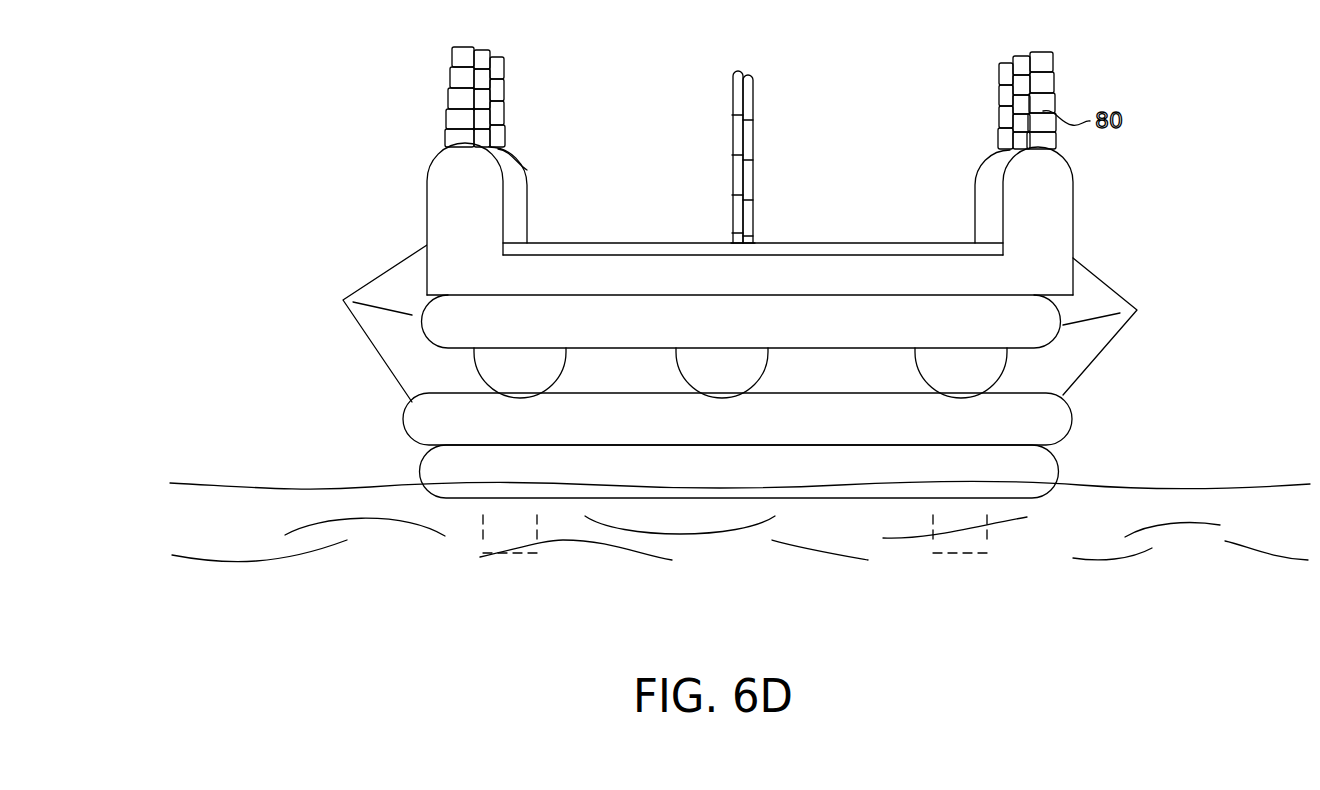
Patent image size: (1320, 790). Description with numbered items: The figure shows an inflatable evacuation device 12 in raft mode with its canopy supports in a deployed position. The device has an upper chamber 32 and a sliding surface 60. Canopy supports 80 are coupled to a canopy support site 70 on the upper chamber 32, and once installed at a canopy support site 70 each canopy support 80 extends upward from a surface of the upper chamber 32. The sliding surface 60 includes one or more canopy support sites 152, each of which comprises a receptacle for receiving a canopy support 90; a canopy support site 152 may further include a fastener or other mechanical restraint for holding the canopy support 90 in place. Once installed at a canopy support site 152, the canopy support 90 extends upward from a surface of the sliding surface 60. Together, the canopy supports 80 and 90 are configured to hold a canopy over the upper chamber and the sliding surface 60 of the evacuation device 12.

The inflatable evacuation device 12 is at (293, 236).
The upper chamber 32 is at (1056, 210).
The sliding surface 60 is at (855, 243).
The canopy support site 70 is at (505, 152).
The canopy support 80 is at (495, 105).
The canopy support 90 is at (752, 128).
The canopy support site 152 is at (755, 238).